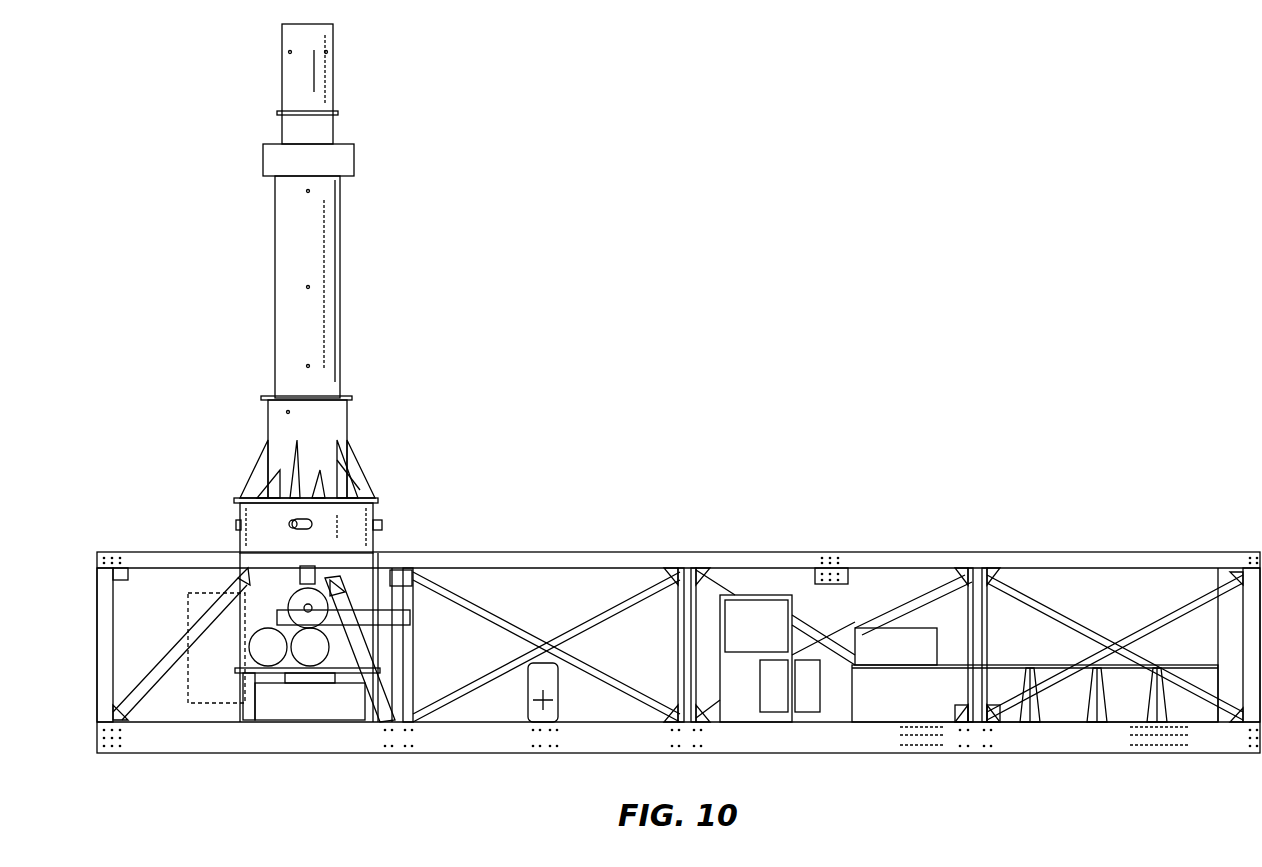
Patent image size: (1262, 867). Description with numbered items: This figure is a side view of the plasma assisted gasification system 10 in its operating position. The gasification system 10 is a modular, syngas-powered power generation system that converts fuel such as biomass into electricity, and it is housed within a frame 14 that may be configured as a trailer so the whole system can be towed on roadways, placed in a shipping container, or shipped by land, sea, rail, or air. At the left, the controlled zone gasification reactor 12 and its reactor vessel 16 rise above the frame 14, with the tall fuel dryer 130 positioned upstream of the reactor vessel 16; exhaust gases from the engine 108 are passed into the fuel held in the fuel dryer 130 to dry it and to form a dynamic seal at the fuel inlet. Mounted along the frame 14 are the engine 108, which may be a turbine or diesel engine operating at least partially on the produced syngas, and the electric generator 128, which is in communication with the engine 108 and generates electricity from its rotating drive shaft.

The plasma assisted gasification system 10 is at (444, 200).
The frame 14 is at (923, 560).
The fuel dryer 130 is at (328, 432).
The controlled zone gasification reactor 12 is at (375, 550).
The reactor vessel 16 is at (360, 598).
The electric generator 128 is at (930, 630).
The engine 108 is at (1113, 598).